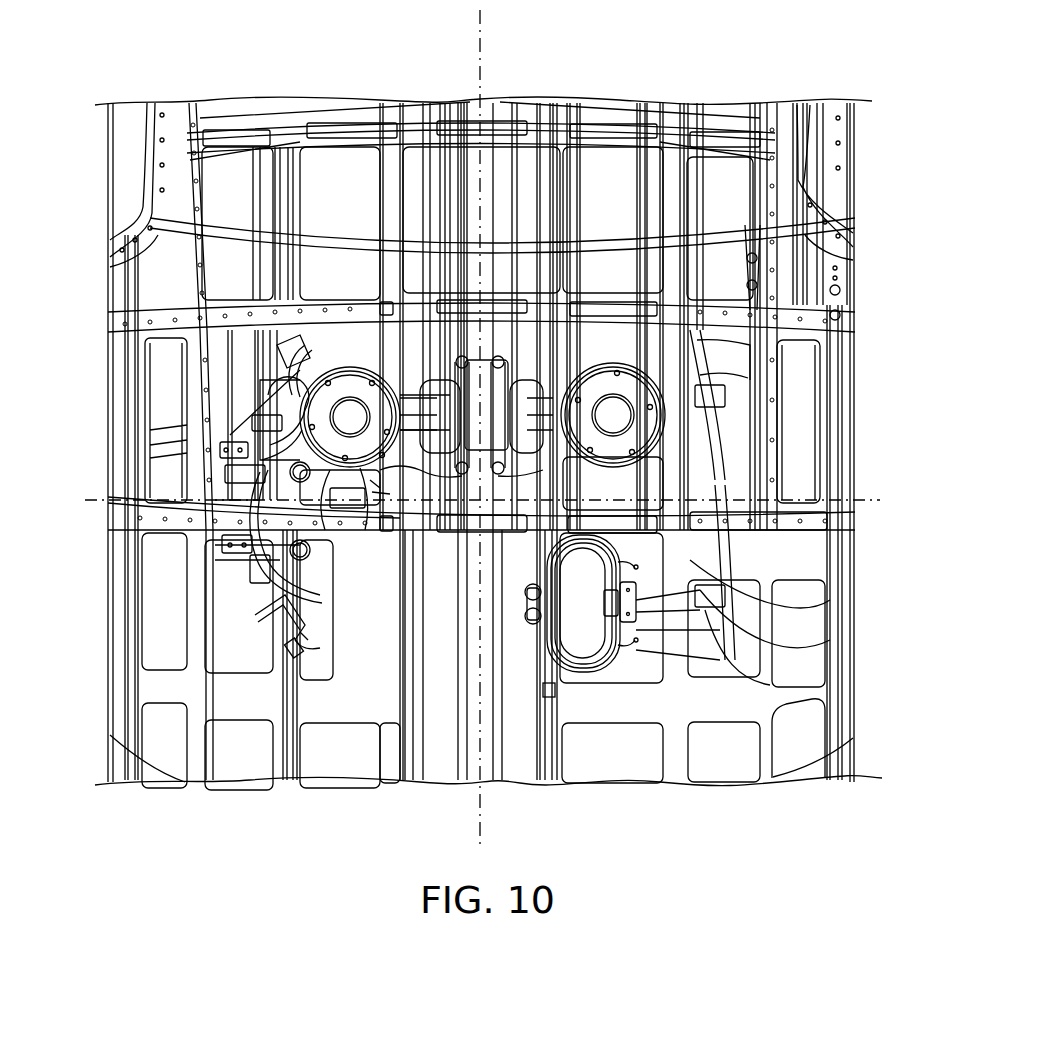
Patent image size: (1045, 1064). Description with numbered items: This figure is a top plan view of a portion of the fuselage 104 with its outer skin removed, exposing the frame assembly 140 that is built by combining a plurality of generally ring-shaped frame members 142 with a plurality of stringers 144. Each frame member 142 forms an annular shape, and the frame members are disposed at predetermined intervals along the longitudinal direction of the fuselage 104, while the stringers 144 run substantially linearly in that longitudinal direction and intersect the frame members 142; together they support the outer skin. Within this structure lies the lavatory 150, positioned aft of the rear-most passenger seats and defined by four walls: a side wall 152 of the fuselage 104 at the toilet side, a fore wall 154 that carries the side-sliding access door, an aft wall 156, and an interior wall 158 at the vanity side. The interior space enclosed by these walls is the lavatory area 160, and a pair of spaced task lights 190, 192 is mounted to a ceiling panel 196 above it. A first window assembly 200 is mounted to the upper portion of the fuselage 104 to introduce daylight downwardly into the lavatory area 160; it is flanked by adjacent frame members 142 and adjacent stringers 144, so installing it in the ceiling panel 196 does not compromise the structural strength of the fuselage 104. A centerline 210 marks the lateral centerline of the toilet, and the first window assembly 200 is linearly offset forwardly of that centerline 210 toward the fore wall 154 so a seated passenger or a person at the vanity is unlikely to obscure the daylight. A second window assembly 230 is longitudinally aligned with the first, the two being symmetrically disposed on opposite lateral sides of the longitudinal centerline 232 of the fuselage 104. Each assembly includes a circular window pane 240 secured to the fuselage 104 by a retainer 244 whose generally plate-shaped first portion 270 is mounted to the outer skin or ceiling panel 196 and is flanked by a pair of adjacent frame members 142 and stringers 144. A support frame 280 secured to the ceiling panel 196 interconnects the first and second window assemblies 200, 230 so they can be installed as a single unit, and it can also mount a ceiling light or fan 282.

The fuselage 104 is at (740, 90).
The frame assembly 140 is at (182, 688).
The frame members 142 is at (782, 318).
The stringers 144 is at (288, 126).
The lavatory 150 is at (364, 694).
The side wall 152 is at (800, 448).
The fore wall 154 is at (323, 322).
The aft wall 156 is at (513, 675).
The interior wall 158 is at (265, 635).
The lavatory area 160 is at (341, 648).
The task light 190 is at (248, 452).
The task light 192 is at (258, 553).
The ceiling panel 196 is at (406, 648).
The first window assembly 200 is at (376, 490).
The centerline 210 is at (866, 500).
The second window assembly 230 is at (618, 344).
The longitudinal centerline 232 is at (483, 28).
The window pane 240 is at (352, 410).
The retainer 244 is at (338, 458).
The first portion 270 is at (358, 455).
The support frame 280 is at (514, 430).
The ceiling light or fan 282 is at (488, 445).